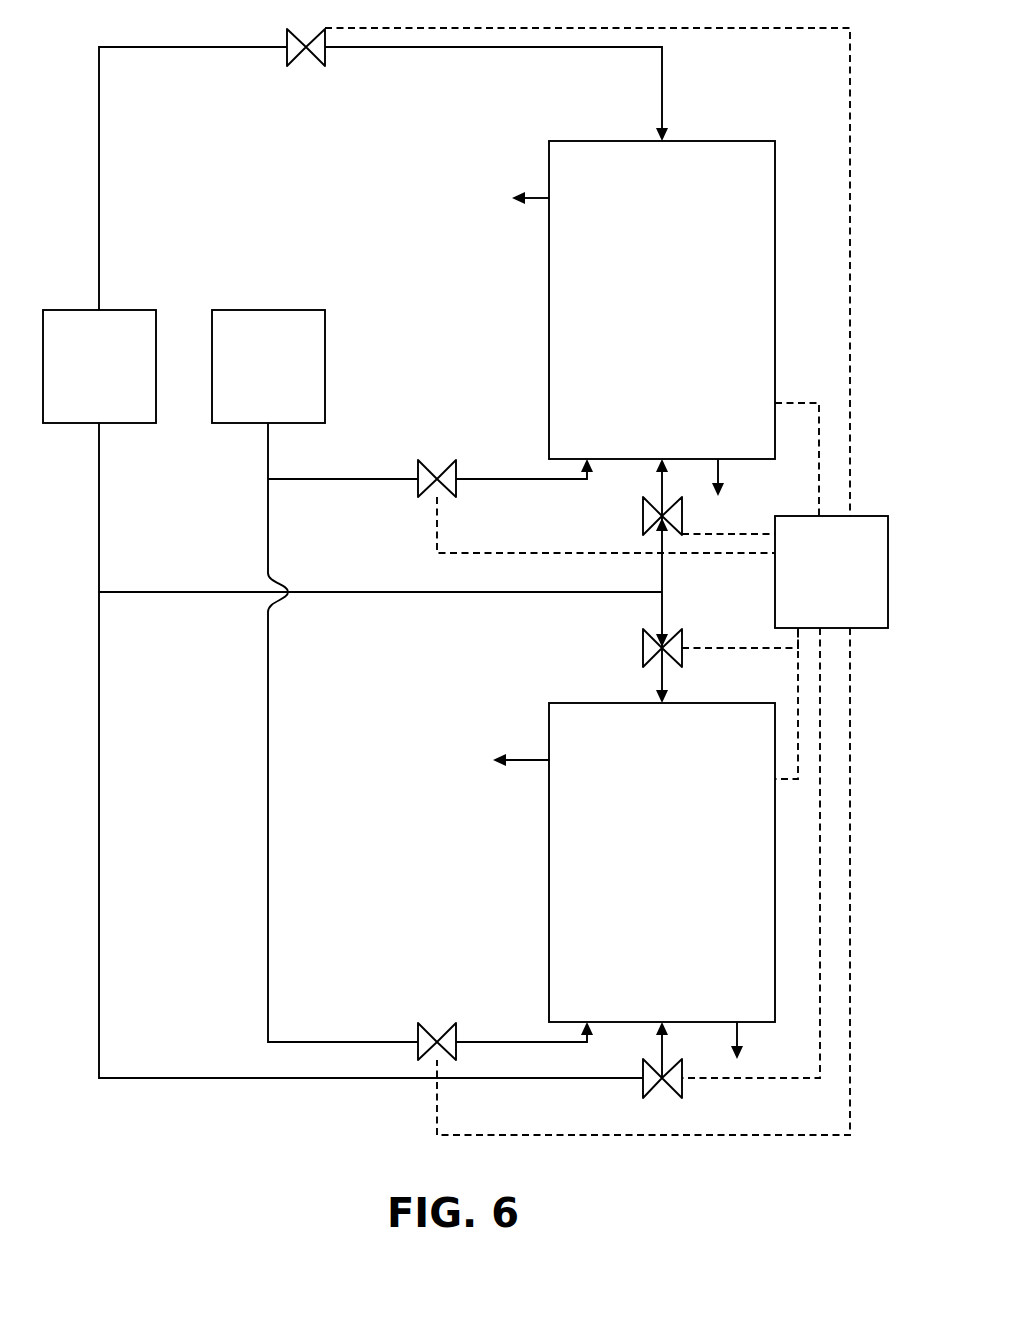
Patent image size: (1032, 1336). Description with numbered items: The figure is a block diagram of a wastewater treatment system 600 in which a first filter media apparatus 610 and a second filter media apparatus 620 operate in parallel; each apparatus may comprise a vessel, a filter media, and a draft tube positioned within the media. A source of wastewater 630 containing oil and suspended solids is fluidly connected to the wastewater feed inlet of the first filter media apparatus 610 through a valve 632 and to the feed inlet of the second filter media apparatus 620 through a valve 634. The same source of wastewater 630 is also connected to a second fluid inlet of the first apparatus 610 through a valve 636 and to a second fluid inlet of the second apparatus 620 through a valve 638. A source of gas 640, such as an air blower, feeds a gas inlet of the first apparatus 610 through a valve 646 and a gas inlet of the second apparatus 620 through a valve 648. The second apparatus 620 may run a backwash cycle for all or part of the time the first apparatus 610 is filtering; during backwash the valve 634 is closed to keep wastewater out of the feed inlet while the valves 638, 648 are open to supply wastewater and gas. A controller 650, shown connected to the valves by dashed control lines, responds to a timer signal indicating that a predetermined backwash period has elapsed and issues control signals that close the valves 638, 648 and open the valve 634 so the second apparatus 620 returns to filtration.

The wastewater treatment system 600 is at (465, 620).
The first filter media apparatus 610 is at (662, 300).
The second filter media apparatus 620 is at (662, 862).
The source of wastewater 630 is at (99, 366).
The source of gas 640 is at (268, 366).
The controller 650 is at (831, 572).
The valve 632 is at (287, 66).
The valve 634 is at (643, 629).
The valve 636 is at (643, 497).
The valve 638 is at (643, 1098).
The valve 646 is at (418, 497).
The valve 648 is at (418, 1023).